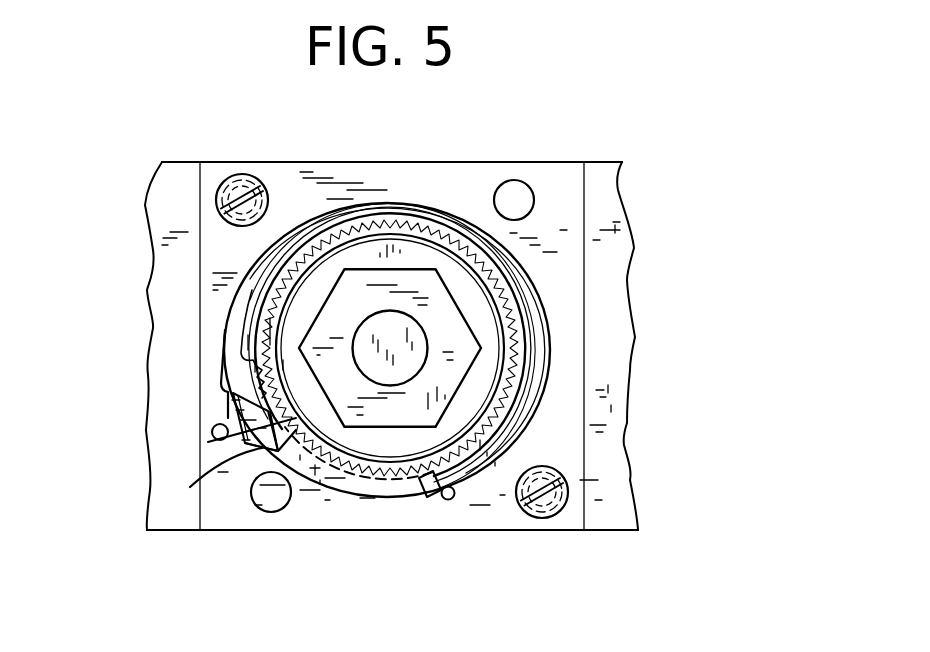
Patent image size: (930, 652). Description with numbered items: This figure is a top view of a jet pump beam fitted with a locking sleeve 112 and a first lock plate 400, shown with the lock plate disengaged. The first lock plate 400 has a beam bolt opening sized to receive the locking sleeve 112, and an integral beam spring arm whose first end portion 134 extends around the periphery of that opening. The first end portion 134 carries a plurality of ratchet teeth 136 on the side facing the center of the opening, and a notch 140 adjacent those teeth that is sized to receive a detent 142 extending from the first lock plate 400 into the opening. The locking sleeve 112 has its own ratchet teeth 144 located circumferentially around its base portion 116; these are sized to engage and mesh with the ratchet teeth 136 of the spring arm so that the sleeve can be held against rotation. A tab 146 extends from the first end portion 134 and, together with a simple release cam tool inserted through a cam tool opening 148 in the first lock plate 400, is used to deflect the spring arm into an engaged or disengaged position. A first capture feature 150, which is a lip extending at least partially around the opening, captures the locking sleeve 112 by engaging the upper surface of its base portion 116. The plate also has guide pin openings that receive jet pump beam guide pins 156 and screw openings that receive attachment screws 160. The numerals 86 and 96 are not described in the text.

The first lock plate 400 is at (691, 132).
The mounting plate 86 is at (633, 330).
The hex nut 96 is at (453, 294).
The locking sleeve 112 is at (483, 325).
The base portion 116 is at (508, 378).
The first end portion 134 is at (226, 352).
The ratchet teeth 136 is at (224, 370).
The notch 140 is at (232, 403).
The detent 142 is at (278, 452).
The ratchet teeth 144 is at (498, 425).
The tab 146 is at (232, 442).
The cam tool opening 148 is at (212, 433).
The first capture feature 150 is at (392, 490).
The jet pump beam guide pin 156 is at (511, 193).
The attachment screws 160 is at (218, 193).